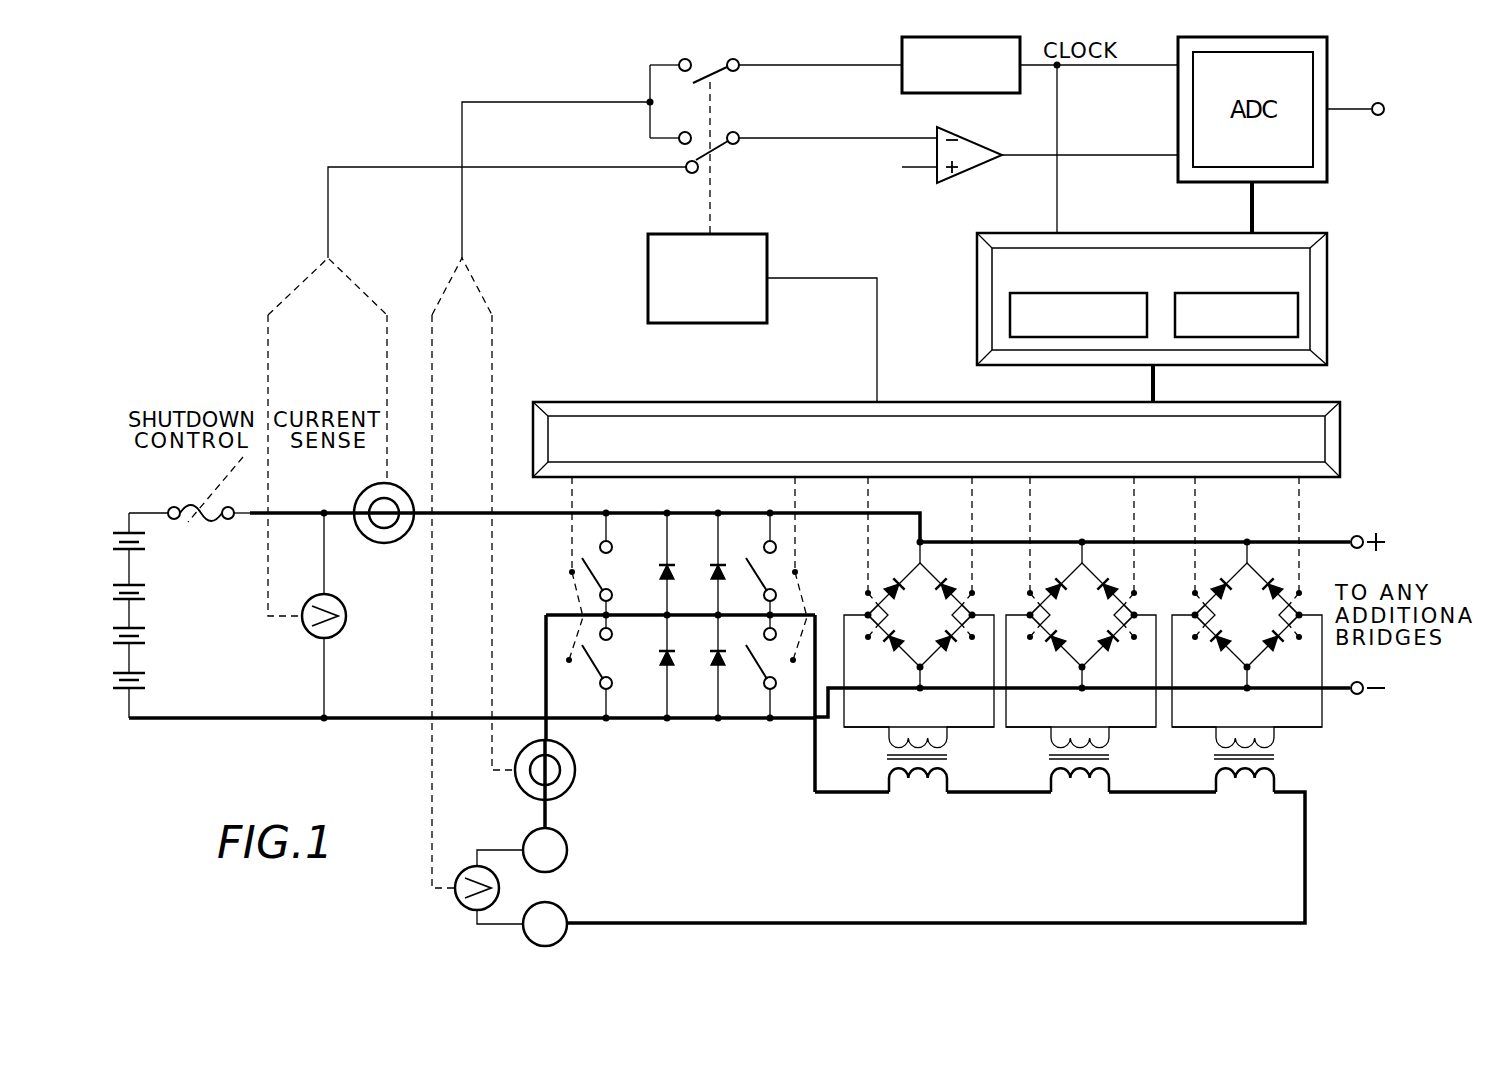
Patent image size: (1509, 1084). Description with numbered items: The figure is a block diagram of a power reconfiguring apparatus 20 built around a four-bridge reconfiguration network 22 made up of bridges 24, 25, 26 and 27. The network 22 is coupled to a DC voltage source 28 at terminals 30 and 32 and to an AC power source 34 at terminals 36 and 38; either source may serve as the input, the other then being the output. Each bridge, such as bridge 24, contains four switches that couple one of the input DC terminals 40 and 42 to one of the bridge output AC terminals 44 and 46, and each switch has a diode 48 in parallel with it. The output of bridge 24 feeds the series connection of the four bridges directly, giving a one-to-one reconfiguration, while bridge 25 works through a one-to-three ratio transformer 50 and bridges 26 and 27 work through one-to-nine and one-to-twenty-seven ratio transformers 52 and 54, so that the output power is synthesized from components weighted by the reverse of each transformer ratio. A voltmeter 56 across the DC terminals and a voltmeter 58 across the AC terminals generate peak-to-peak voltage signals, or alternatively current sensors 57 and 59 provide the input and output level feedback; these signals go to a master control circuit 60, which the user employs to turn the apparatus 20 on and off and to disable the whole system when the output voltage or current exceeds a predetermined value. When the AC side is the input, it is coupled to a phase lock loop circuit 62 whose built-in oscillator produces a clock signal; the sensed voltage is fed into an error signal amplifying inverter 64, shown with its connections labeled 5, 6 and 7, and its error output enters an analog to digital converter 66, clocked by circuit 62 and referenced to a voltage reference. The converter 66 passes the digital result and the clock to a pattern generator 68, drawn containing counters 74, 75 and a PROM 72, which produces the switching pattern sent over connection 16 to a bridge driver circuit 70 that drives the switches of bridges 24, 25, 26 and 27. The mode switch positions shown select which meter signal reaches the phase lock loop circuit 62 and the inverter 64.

The error amplifier non-inverting input 5 is at (919, 155).
The error amplifier inverting input / ADC data bus 6 is at (1009, 173).
The error amplifier output 7 is at (1090, 141).
The pattern generator output bus 16 is at (1173, 383).
The power reconfiguring apparatus 20 is at (286, 240).
The four-bridge reconfiguration network 22 is at (478, 510).
The bridge 24 is at (568, 595).
The bridge 25 is at (866, 608).
The bridge 26 is at (1028, 608).
The bridge 27 is at (1193, 608).
The DC voltage source 28 is at (160, 615).
The terminal 30 is at (148, 537).
The terminal 32 is at (131, 720).
The AC power source 34 is at (550, 887).
The terminal 36 is at (567, 848).
The terminal 38 is at (566, 914).
The input DC terminal 40 is at (698, 512).
The input DC terminal 42 is at (633, 720).
The bridge output AC terminal 44 is at (634, 618).
The bridge output AC terminal 46 is at (750, 614).
The diode 48 is at (706, 665).
The 1:3 ratio transformer 50 is at (950, 757).
The 1:9 ratio transformer 52 is at (1112, 757).
The 1:27 ratio transformer 54 is at (1278, 762).
The voltmeter 56 is at (346, 620).
The current source 57 is at (405, 545).
The voltmeter 58 is at (458, 868).
The current source 59 is at (521, 793).
The master control circuit 60 is at (712, 326).
The phase lock loop circuit 62 is at (900, 92).
The error signal amplifying inverter 64 is at (986, 141).
The analog to digital converter 66 is at (1330, 127).
The pattern generator 68 is at (1146, 299).
The bridge driver circuit 70 is at (1343, 438).
The PROM 72 is at (1298, 323).
The counters 74 is at (1029, 330).
The counters 75 is at (1010, 322).